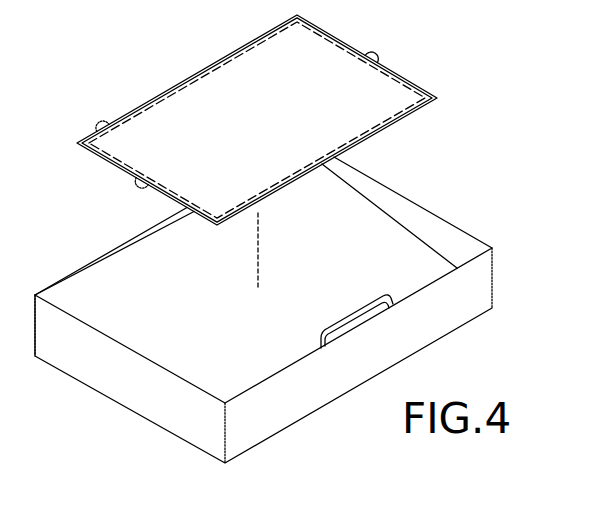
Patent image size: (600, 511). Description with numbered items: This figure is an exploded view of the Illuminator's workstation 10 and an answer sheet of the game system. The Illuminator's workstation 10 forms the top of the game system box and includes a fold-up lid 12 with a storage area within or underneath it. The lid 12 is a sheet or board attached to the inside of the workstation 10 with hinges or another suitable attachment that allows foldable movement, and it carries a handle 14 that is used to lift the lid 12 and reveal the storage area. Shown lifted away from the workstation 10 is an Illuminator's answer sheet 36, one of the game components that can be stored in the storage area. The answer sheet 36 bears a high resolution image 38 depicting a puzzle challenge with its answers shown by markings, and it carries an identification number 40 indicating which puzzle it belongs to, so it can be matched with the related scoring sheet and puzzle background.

The Illuminator's workstation 10 is at (487, 285).
The fold-up lid 12 is at (103, 268).
The handle 14 is at (343, 323).
The Illuminator's answer sheet 36 is at (222, 70).
The high resolution image 38 is at (158, 92).
The identification number 40 is at (95, 115).